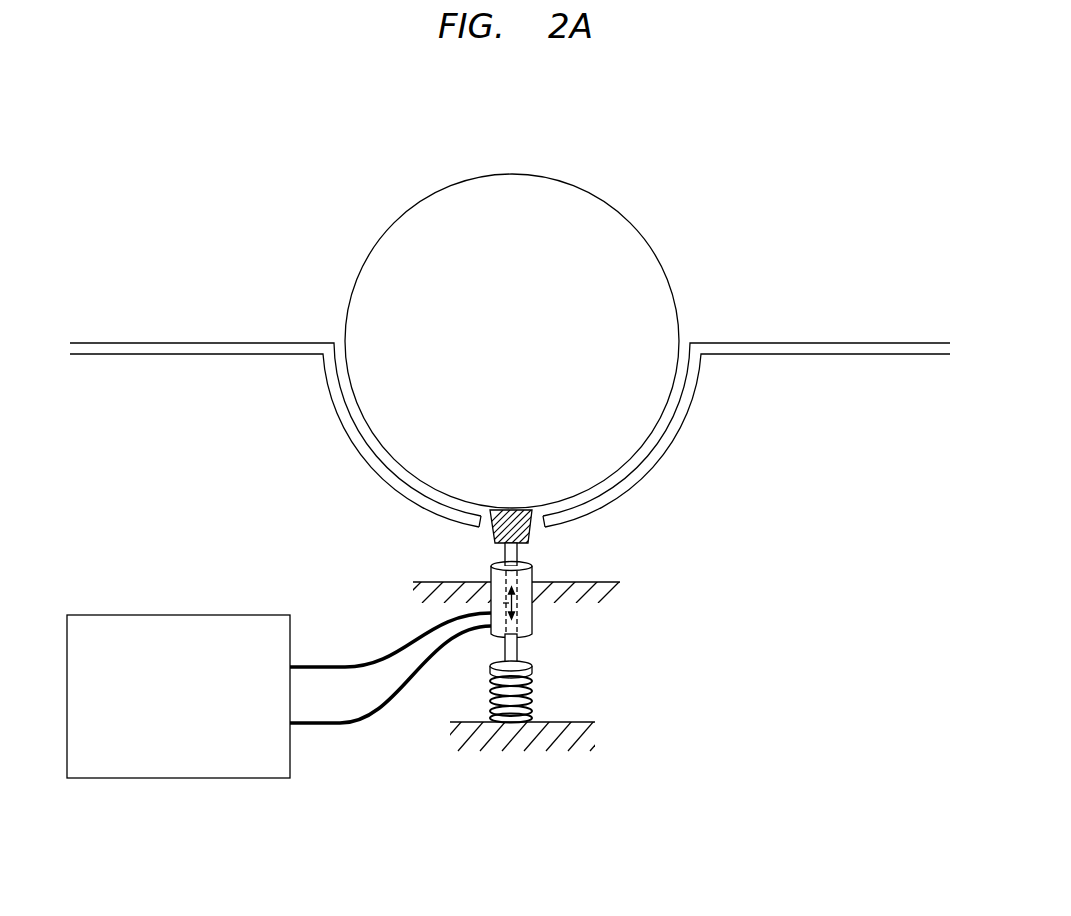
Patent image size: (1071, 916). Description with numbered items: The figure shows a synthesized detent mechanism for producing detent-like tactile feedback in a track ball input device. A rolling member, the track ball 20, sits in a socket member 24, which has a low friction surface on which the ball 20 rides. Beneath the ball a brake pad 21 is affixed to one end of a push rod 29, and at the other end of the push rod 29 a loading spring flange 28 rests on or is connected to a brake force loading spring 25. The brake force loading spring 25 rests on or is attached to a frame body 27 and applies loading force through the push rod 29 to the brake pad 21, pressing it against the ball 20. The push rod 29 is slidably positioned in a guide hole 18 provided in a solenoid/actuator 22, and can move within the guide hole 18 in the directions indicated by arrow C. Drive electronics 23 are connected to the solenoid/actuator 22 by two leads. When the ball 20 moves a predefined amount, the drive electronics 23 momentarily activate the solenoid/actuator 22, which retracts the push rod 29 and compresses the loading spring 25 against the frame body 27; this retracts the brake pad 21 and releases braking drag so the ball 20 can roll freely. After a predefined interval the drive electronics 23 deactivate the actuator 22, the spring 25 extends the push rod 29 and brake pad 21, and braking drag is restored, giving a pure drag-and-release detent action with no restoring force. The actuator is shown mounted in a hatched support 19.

The guide hole 18 is at (532, 562).
The frame / support 19 is at (430, 592).
The track ball 20 is at (663, 270).
The brake pad 21 is at (532, 541).
The solenoid/actuator 22 is at (533, 620).
The drive electronics 23 is at (180, 778).
The socket member 24 is at (645, 477).
The brake force loading spring 25 is at (533, 722).
The frame body 27 is at (520, 752).
The loading spring flange 28 is at (533, 676).
The push rod 29 is at (519, 653).